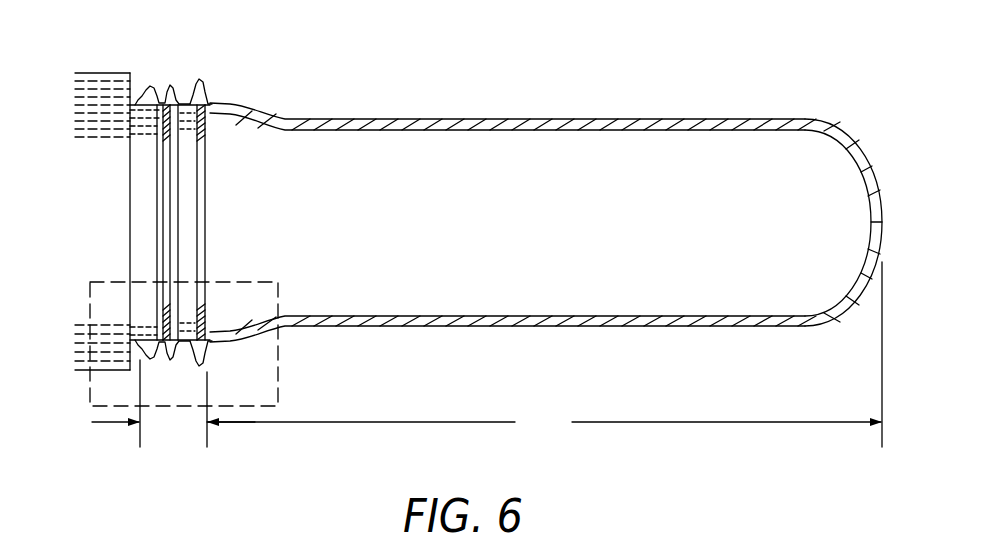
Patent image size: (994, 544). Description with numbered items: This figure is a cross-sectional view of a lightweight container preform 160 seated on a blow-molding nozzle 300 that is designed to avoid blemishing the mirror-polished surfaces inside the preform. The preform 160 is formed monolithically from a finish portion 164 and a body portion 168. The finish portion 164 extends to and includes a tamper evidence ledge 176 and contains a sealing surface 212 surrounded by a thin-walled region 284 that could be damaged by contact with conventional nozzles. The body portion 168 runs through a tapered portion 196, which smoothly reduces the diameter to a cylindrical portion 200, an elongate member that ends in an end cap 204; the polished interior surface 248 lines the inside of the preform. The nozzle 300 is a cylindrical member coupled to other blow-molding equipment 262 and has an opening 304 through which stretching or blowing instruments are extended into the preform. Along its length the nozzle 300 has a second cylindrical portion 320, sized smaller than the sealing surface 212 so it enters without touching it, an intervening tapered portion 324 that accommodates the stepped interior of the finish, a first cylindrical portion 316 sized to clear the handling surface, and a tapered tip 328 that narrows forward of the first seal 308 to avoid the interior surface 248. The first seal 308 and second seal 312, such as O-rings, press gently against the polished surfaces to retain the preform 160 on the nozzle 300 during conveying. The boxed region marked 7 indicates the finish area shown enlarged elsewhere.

The preform 160 is at (568, 96).
The tapered portion 196 is at (277, 110).
The cylindrical portion 200 is at (628, 327).
The end cap 204 is at (882, 220).
The interior surface 248 is at (499, 231).
The nozzle 300 is at (122, 221).
The second cylindrical portion 320 is at (150, 187).
The tapered portion 324 is at (158, 136).
The second seal 312 is at (166, 152).
The tapered tip 328 is at (203, 180).
The first cylindrical portion 316 is at (185, 238).
The first seal 308 is at (200, 267).
The sealing surface 212 is at (138, 98).
The thin-walled region 284 is at (148, 98).
The tamper evidence ledge 176 is at (201, 93).
The blow-molding equipment 262 is at (90, 73).
The opening 304 is at (239, 212).
The detail region of FIG. 7 is at (281, 389).
The finish portion 164 is at (173, 403).
The body portion 168 is at (544, 354).